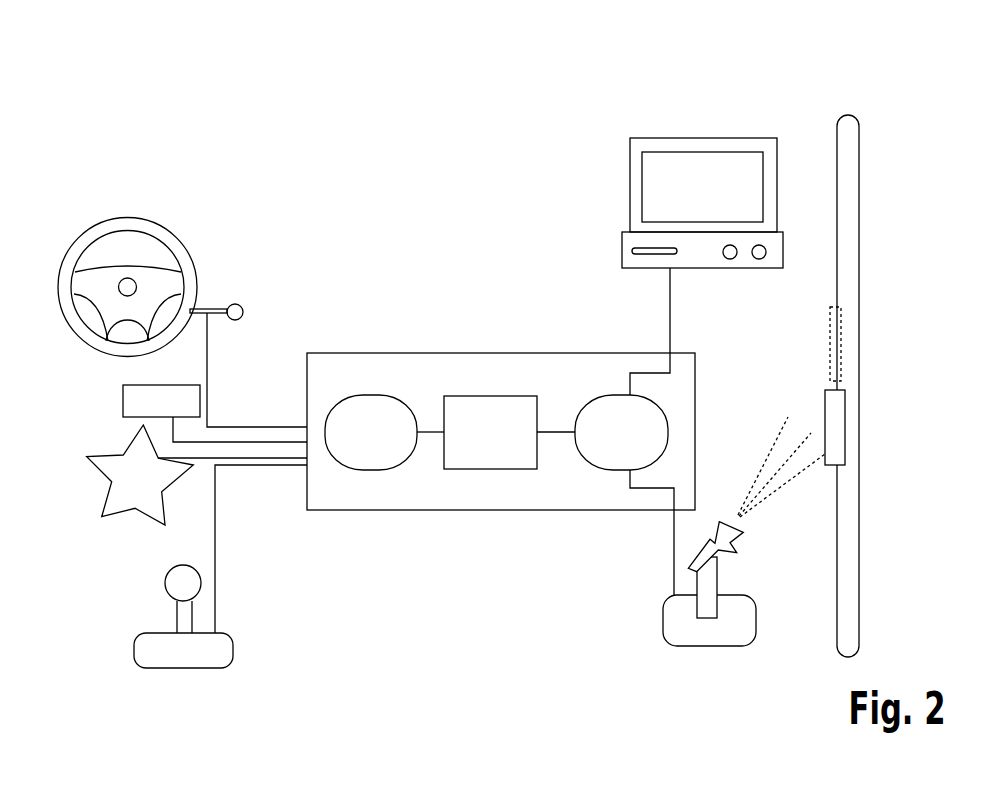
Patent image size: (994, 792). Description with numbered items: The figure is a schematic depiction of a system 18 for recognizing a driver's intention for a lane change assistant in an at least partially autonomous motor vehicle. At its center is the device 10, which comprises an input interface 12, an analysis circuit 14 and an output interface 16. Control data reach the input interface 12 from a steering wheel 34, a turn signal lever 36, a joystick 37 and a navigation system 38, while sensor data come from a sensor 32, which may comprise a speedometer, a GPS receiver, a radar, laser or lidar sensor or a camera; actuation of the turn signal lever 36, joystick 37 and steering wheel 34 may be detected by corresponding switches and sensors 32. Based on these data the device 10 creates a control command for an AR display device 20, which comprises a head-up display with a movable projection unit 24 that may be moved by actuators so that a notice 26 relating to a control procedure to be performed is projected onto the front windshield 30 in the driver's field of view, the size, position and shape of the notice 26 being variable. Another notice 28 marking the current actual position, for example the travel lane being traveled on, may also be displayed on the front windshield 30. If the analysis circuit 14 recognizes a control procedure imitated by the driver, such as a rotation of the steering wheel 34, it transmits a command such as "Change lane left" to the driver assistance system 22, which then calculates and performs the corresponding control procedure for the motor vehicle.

The device 10 is at (410, 510).
The input interface 12 is at (371, 395).
The analysis circuit 14 is at (490, 469).
The output interface 16 is at (611, 395).
The system 18 is at (458, 250).
The AR display device 20 is at (779, 391).
The driver assistance system 22 is at (702, 138).
The projection unit 24 is at (663, 618).
The notice 26 is at (846, 444).
The another notice 28 is at (842, 360).
The front windshield 30 is at (836, 627).
The sensor 32 is at (120, 518).
The steering wheel 34 is at (128, 219).
The turn signal lever 36 is at (218, 306).
The joystick 37 is at (234, 650).
The navigation system 38 is at (123, 402).